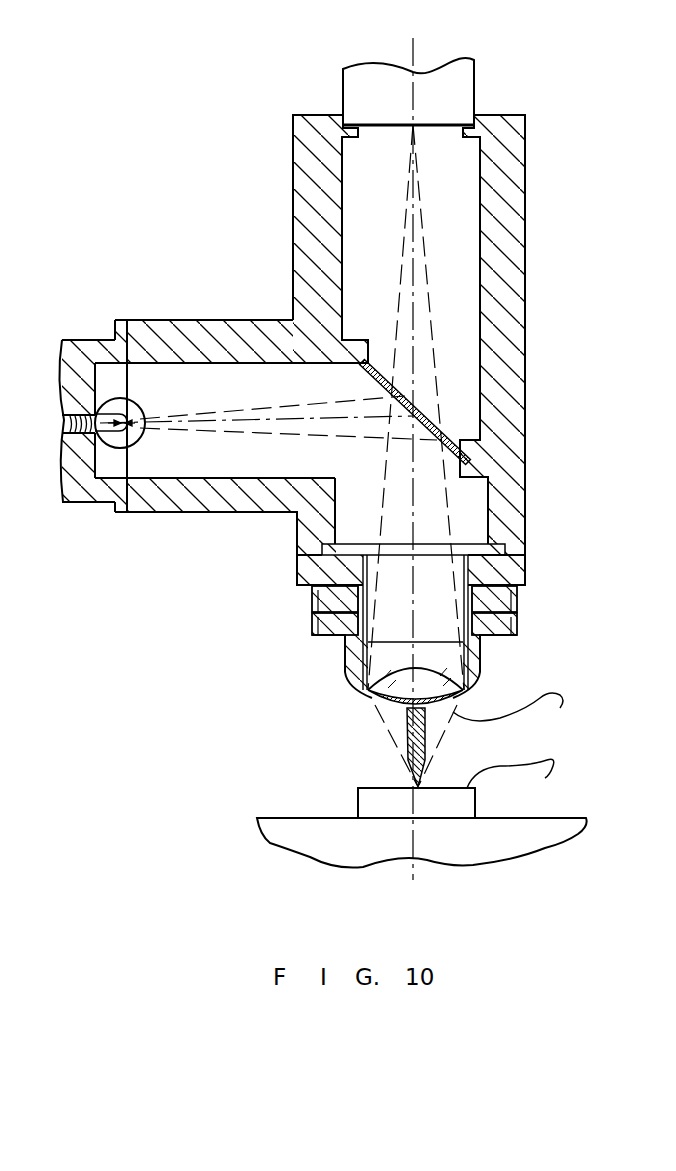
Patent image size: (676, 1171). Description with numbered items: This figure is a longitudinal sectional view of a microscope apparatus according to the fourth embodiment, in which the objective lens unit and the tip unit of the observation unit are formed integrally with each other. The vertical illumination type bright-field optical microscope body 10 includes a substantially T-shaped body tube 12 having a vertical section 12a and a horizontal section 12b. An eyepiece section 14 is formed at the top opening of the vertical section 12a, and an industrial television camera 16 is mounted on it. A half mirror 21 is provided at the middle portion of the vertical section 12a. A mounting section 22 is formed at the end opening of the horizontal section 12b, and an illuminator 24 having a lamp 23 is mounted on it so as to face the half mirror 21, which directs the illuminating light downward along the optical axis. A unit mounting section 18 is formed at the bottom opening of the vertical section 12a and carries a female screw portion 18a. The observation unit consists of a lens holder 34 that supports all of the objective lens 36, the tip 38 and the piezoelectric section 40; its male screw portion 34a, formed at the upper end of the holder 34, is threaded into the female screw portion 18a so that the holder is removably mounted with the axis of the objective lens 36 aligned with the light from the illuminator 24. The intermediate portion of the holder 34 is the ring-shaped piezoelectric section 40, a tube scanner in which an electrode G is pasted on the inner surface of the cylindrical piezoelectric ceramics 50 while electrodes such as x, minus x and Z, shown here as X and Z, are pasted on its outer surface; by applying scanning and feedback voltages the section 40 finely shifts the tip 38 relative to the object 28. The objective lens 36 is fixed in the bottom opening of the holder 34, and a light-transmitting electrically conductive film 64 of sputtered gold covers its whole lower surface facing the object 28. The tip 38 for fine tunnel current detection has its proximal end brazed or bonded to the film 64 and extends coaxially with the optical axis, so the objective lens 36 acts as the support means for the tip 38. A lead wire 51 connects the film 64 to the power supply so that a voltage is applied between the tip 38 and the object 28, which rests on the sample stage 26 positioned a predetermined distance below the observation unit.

The optical microscope body 10 is at (262, 185).
The body tube 12 is at (527, 262).
The vertical section 12a is at (516, 150).
The horizontal section 12b is at (213, 320).
The eyepiece section 14 is at (323, 124).
The industrial television (ITV) camera 16 is at (375, 68).
The unit mounting section 18 is at (497, 528).
The female screw portion 18a is at (337, 545).
The half mirror 21 is at (425, 412).
The mounting section 22 is at (128, 340).
The lamp 23 is at (145, 443).
The illuminator 24 is at (95, 345).
The sample stage 26 is at (533, 845).
The object of observation 28 is at (476, 800).
The lens holder 34 is at (345, 668).
The male screw portion 34a is at (505, 548).
The objective lens 36 is at (368, 695).
The tip 38 is at (427, 735).
The piezoelectric section 40 is at (498, 640).
The cylindrical piezoelectric ceramics 50 is at (312, 640).
The lead wire 51 is at (508, 719).
The electrically conductive film 64 is at (403, 745).
The electrode G is at (312, 606).
The electrode x X is at (312, 630).
The electrode Z is at (518, 597).